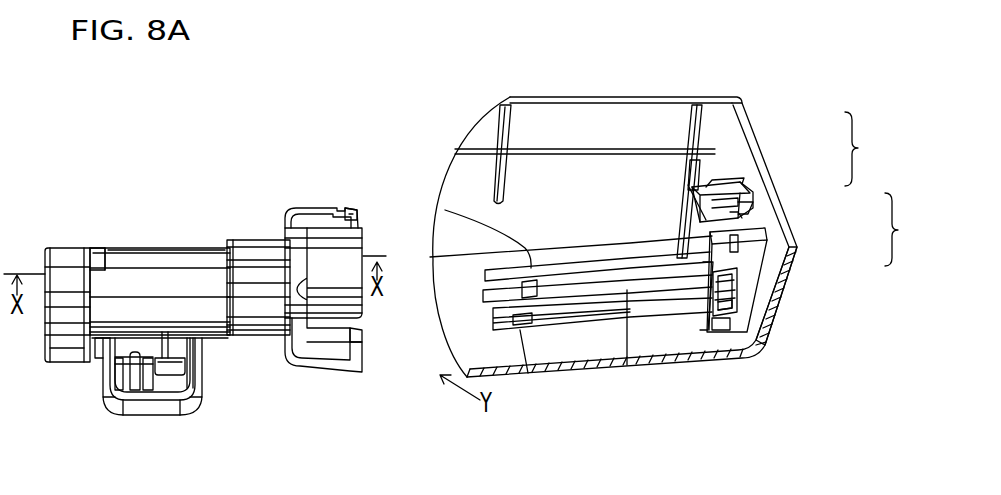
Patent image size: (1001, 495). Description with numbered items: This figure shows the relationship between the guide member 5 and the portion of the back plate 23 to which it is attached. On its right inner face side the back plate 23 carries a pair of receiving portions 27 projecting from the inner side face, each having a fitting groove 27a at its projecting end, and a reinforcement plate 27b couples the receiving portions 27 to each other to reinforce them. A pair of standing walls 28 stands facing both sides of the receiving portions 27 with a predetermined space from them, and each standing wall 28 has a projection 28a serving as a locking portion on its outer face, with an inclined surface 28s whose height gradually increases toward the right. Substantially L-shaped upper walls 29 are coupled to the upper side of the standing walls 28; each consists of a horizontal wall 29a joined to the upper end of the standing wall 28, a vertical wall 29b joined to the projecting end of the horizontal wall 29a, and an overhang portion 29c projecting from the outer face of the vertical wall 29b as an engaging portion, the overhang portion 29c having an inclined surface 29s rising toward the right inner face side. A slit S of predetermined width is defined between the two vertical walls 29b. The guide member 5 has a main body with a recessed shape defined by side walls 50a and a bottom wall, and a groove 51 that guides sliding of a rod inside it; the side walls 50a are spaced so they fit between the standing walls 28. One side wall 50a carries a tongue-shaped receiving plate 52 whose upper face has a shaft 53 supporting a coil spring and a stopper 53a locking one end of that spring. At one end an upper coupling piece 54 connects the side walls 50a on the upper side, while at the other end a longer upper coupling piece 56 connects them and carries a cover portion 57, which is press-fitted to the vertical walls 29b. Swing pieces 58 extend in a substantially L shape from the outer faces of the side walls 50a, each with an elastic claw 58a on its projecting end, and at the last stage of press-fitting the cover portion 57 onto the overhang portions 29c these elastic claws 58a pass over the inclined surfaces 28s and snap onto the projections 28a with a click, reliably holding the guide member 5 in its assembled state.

The guide member 5 is at (153, 247).
The back plate 23 is at (600, 94).
The receiving portions 27 is at (563, 263).
The fitting groove 27a is at (492, 318).
The reinforcement plate 27b is at (523, 247).
The standing walls 28 is at (680, 228).
The projection 28a is at (778, 283).
The inclined surface 28s is at (720, 332).
The upper walls 29 is at (811, 214).
The horizontal wall 29a is at (713, 180).
The vertical wall 29b is at (746, 196).
The overhang portion 29c is at (714, 186).
The inclined surface 29s is at (703, 193).
The side walls 50a is at (178, 248).
The groove 51 is at (104, 283).
The receiving plate 52 is at (193, 412).
The shaft 53 is at (115, 355).
The stopper 53a is at (188, 360).
The upper coupling piece 54 is at (62, 248).
The upper coupling piece 56 is at (252, 285).
The cover portion 57 is at (345, 247).
The swing pieces 58 is at (312, 228).
The elastic claw 58a is at (355, 222).
The slit S is at (745, 212).